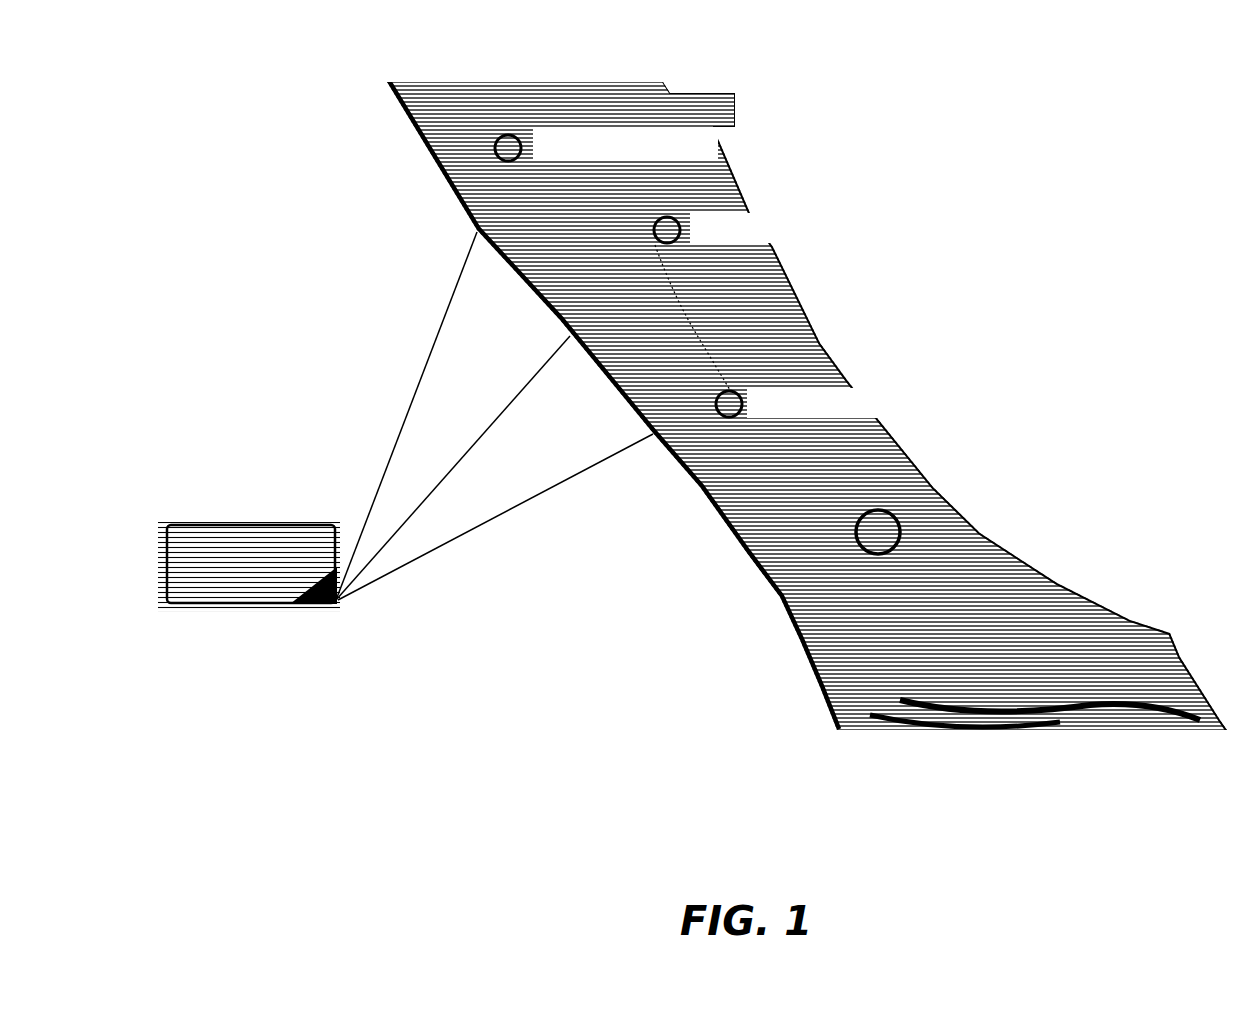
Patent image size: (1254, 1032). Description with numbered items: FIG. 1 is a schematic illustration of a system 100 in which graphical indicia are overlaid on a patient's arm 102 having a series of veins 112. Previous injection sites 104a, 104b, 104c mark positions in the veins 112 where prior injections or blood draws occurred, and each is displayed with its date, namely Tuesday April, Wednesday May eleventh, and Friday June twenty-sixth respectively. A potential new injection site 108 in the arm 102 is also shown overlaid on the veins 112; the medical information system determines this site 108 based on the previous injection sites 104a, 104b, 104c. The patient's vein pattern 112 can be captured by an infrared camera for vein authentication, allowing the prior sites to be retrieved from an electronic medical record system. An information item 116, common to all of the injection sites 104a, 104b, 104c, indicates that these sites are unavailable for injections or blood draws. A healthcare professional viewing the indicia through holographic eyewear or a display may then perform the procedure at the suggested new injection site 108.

The system / environment 100 is at (156, 62).
The patient's arm 102 is at (822, 345).
The previous injection site 104a is at (652, 144).
The previous injection site 104b is at (816, 228).
The previous injection site 104c is at (861, 403).
The potential new injection site 108 is at (900, 538).
The veins 112 is at (860, 477).
The information item 116 is at (157, 563).